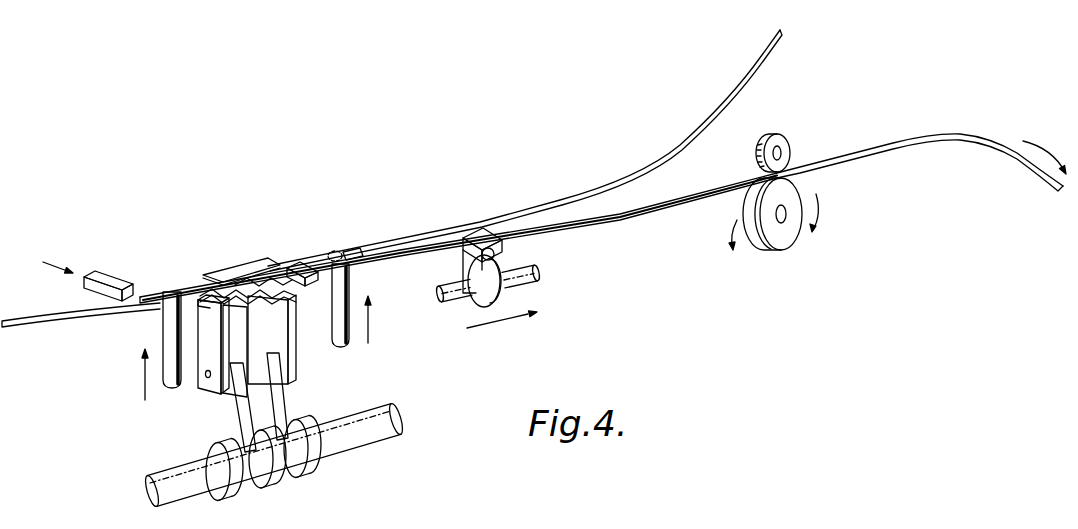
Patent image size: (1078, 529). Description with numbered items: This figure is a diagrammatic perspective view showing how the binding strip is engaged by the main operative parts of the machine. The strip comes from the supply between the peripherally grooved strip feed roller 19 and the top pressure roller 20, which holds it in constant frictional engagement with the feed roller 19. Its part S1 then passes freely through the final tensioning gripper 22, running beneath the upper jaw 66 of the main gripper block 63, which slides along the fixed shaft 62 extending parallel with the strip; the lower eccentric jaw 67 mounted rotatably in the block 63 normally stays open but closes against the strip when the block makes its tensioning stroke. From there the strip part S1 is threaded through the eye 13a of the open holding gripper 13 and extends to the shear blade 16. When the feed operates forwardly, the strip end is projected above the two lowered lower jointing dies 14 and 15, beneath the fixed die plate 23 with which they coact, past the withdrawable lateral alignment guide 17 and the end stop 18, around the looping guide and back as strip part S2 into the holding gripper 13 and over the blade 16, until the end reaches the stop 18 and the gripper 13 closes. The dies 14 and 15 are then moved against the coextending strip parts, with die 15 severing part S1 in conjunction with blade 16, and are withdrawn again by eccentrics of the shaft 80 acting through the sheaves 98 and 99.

The holding gripper 13 is at (351, 280).
The eye 13a is at (352, 252).
The lower jointing die 14 is at (202, 345).
The lower jointing die 15 is at (277, 310).
The shear blade 16 is at (298, 268).
The lateral alignment guide 17 is at (163, 321).
The end stop 18 is at (110, 278).
The strip feed roller 19 is at (793, 195).
The top pressure roller 20 is at (778, 137).
The final tensioning gripper 22 is at (503, 255).
The die plate 23 is at (224, 276).
The fixed shaft 62 is at (530, 280).
The main gripper block 63 is at (494, 307).
The upper jaw 66 is at (482, 232).
The lower eccentric jaw 67 is at (478, 262).
The shaft 80 is at (368, 416).
The sheave 98 is at (232, 409).
The sheave 99 is at (272, 392).
The strip part S1 is at (660, 206).
The strip part S2 is at (590, 192).